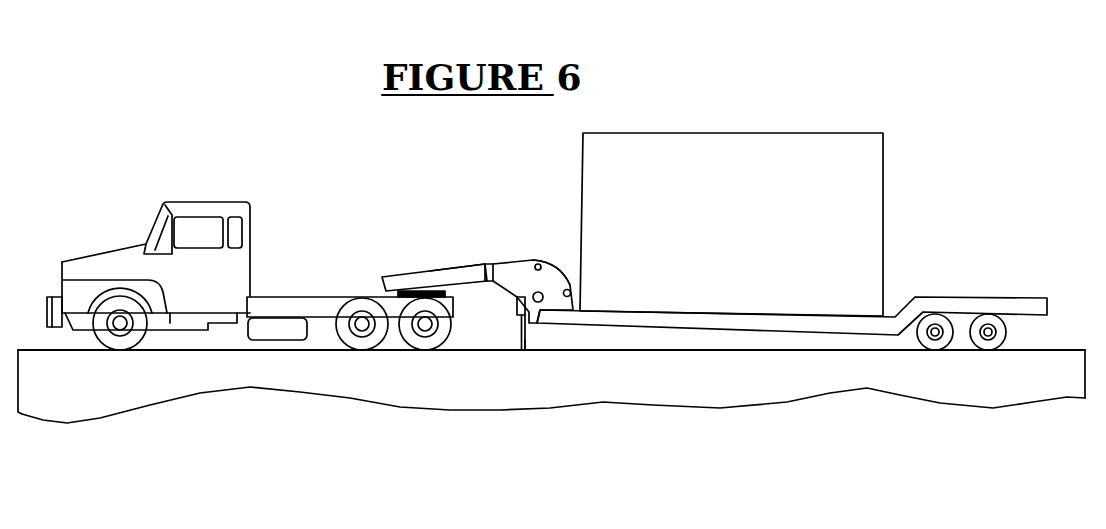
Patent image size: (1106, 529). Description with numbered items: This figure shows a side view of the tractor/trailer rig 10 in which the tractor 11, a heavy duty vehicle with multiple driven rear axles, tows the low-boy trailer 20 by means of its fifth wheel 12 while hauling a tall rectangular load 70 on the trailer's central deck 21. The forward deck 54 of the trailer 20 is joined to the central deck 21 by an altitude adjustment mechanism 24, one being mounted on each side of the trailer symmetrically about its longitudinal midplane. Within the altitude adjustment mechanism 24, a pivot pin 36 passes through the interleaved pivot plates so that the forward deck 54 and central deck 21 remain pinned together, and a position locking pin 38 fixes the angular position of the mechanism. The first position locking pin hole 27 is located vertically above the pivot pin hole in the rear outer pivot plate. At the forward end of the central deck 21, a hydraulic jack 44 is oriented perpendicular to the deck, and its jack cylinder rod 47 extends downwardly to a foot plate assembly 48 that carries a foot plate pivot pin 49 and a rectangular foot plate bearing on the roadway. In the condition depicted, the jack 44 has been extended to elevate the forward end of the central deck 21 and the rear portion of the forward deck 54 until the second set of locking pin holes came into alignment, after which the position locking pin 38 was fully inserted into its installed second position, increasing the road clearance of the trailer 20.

The tractor/trailer rig 10 is at (214, 150).
The tractor 11 is at (250, 272).
The fifth wheel 12 is at (413, 244).
The low-boy trailer 20 is at (792, 342).
The central deck 21 is at (792, 367).
The altitude adjustment mechanism 24 is at (544, 237).
The first position locking pin hole 27 is at (510, 234).
The pivot pin 36 is at (508, 235).
The position locking pin 38 is at (622, 202).
The hydraulic jack 44 is at (457, 364).
The jack cylinder rod 47 is at (488, 380).
The foot plate assembly 48 is at (562, 340).
The foot plate pivot pin 49 is at (567, 389).
The forward deck 54 is at (430, 201).
The load 70 is at (774, 224).